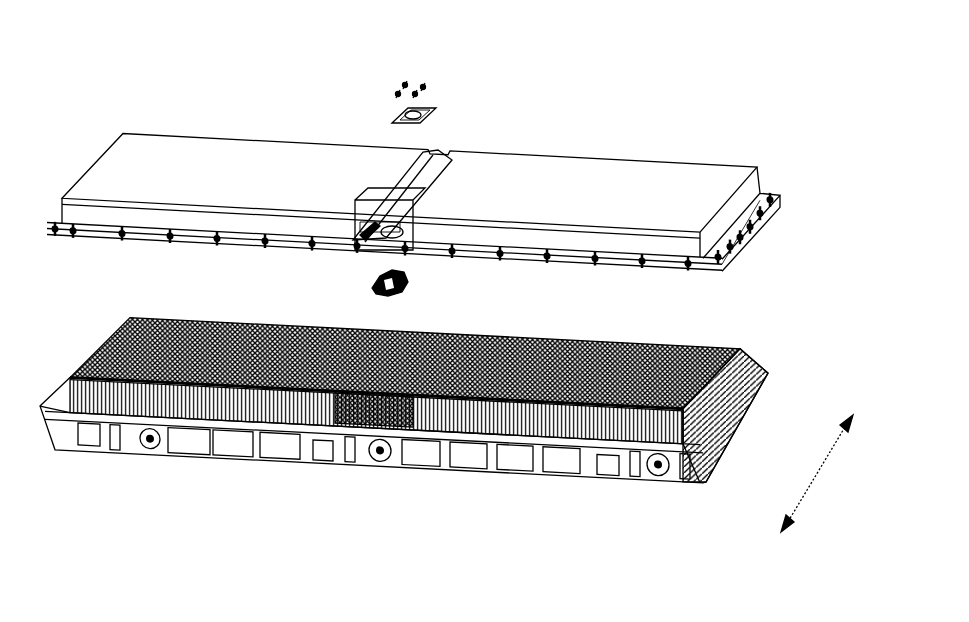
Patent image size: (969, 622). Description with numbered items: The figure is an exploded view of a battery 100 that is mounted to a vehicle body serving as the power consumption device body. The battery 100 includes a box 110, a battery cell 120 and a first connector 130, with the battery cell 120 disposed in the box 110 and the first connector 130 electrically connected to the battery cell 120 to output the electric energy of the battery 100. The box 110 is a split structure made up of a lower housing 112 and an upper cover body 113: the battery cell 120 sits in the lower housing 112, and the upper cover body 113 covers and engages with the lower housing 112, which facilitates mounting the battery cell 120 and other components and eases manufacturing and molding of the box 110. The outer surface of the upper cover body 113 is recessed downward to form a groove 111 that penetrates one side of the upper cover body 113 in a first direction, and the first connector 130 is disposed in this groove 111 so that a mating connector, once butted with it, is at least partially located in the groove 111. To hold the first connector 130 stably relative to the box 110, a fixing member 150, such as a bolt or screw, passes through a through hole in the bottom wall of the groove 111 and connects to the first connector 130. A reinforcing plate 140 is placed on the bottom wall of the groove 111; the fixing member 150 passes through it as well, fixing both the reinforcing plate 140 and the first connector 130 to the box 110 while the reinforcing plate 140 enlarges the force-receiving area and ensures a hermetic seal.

The battery 100 is at (456, 31).
The box 110 is at (823, 273).
The groove 111 is at (352, 253).
The lower housing 112 is at (757, 366).
The upper cover body 113 is at (733, 252).
The battery cell 120 is at (672, 345).
The first connector 130 is at (393, 293).
The reinforcing plate 140 is at (430, 117).
The fixing member 150 is at (432, 92).